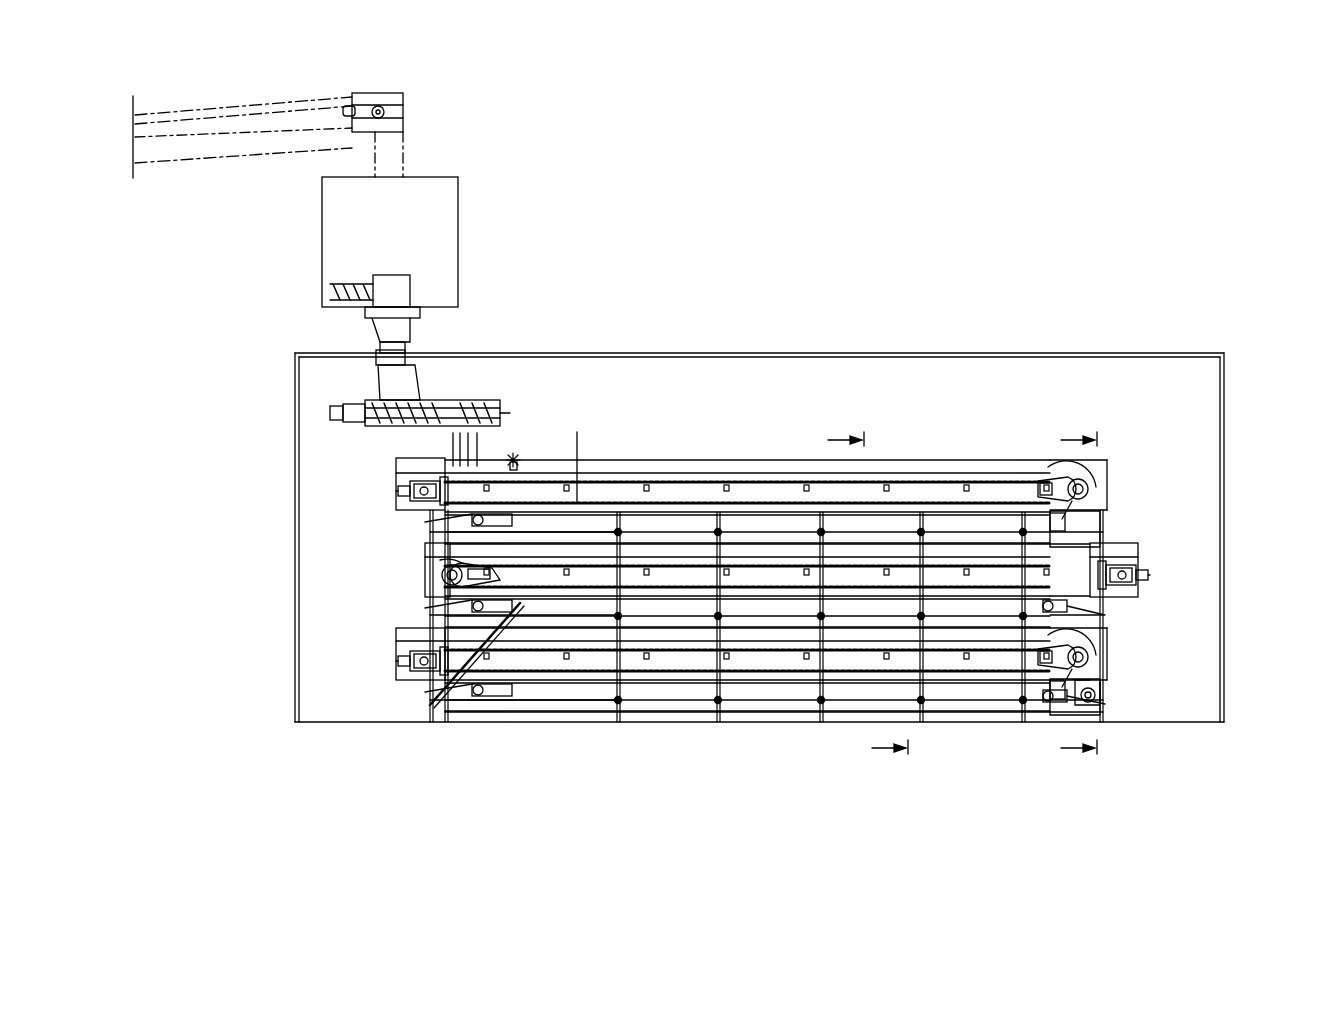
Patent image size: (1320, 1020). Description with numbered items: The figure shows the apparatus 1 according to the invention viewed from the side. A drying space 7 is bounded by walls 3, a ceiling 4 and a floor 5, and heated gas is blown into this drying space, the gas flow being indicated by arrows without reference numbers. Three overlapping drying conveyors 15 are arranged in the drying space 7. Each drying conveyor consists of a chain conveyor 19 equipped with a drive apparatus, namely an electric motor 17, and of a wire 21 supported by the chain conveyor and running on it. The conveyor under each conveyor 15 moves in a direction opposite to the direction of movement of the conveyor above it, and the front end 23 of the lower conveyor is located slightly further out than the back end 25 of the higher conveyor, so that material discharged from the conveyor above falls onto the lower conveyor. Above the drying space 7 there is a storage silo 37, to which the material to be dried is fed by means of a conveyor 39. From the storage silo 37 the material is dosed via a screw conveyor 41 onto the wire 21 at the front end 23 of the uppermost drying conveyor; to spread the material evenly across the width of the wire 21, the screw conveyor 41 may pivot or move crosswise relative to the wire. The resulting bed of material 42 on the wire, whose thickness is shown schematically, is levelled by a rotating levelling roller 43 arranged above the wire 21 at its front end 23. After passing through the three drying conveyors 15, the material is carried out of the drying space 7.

The apparatus 1 is at (898, 273).
The walls 3 is at (1226, 412).
The ceiling 4 is at (1080, 352).
The floor 5 is at (1184, 723).
The drying space 7 is at (742, 407).
The drying conveyors 15 is at (1200, 500).
The electric motor 17 is at (1080, 472).
The chain conveyor 19 is at (575, 520).
The wire 21 is at (712, 528).
The front end 23 is at (432, 483).
The back end 25 is at (1090, 479).
The storage silo 37 is at (460, 215).
The conveyor 39 is at (295, 102).
The screw conveyor 41 is at (470, 410).
The bed of material 42 is at (528, 467).
The levelling roller 43 is at (515, 455).